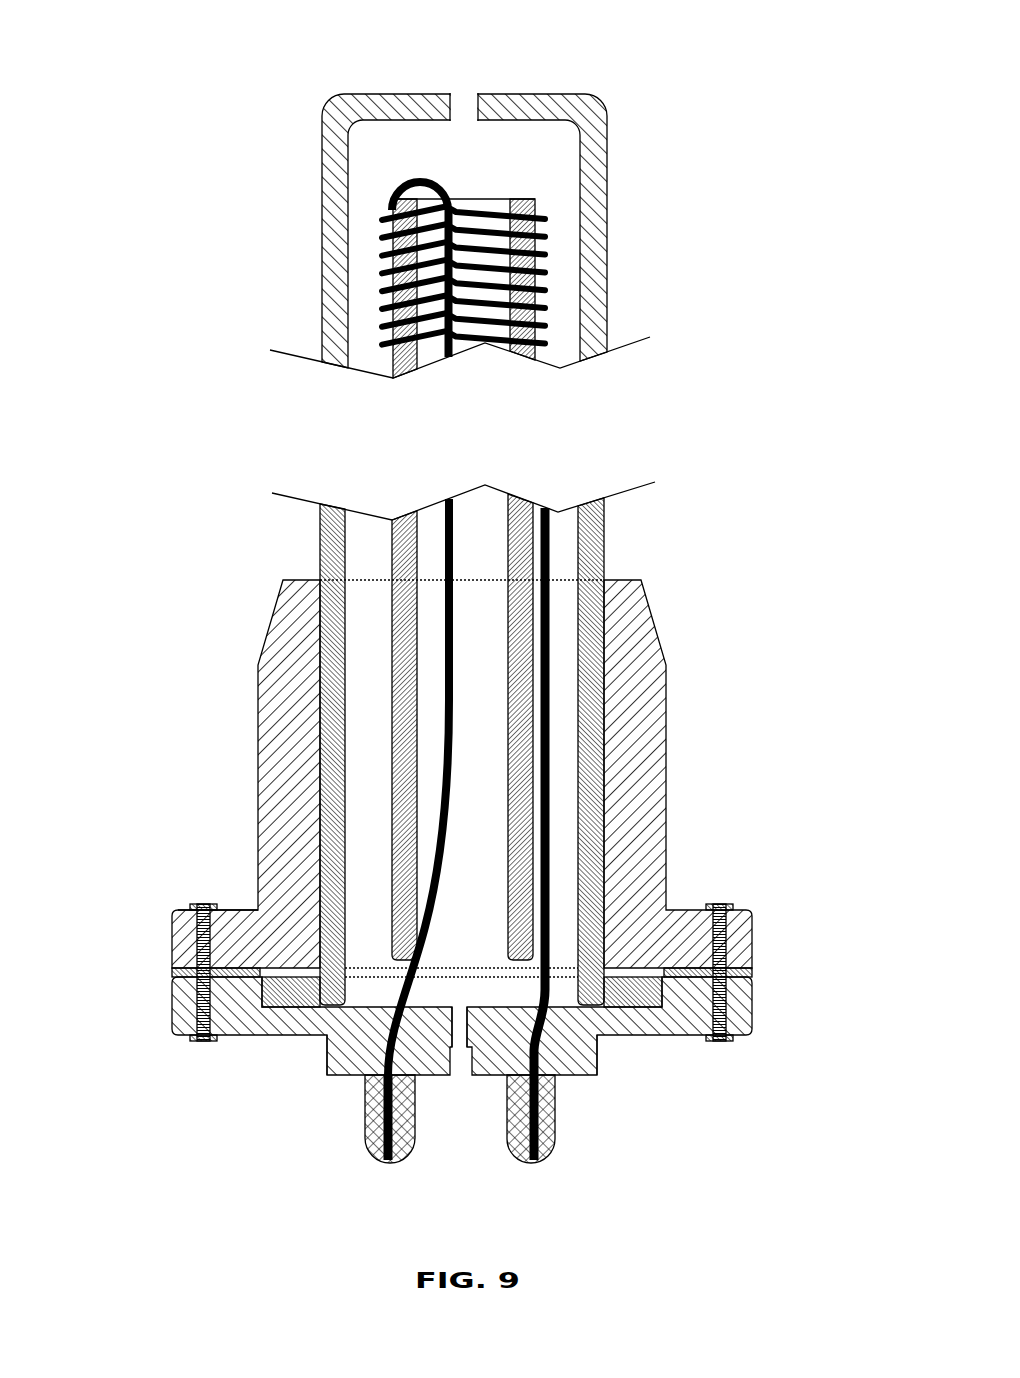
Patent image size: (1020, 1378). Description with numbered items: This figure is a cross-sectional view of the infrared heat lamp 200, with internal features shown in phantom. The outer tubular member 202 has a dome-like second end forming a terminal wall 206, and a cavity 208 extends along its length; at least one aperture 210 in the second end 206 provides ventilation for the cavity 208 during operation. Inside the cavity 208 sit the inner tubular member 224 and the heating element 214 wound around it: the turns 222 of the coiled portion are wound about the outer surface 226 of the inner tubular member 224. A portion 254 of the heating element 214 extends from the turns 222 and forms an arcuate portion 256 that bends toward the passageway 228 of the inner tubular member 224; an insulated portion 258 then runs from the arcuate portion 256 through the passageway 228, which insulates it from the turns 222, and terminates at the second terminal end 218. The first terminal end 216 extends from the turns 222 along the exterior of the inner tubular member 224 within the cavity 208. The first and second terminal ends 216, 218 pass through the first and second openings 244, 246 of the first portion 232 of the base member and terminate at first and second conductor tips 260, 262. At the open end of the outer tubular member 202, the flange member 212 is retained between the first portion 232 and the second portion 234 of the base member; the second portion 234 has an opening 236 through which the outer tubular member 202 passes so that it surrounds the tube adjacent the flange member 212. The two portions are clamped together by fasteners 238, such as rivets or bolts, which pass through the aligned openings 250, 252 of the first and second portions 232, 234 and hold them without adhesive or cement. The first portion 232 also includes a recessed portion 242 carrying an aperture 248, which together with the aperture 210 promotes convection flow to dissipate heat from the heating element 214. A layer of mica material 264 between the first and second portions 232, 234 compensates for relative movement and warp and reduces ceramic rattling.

The infrared heat lamp 200 is at (150, 132).
The outer tubular member 202 is at (626, 538).
The second end (terminal wall) 206 is at (603, 106).
The cavity 208 is at (494, 164).
The aperture 210 is at (467, 98).
The flange member 212 is at (700, 972).
The heating element 214 is at (372, 308).
The first terminal end 216 is at (538, 1134).
The second terminal end 218 is at (367, 1139).
The turns 222 is at (550, 320).
The inner tubular member 224 is at (548, 194).
The outer surface 226 is at (535, 244).
The passageway 228 is at (501, 712).
The first portion 232 is at (198, 1077).
The second portion 234 is at (698, 777).
The opening 236 is at (318, 579).
The fastener 238 is at (207, 905).
The recessed portion 242 is at (483, 986).
The first opening 244 is at (557, 1052).
The second opening 246 is at (392, 1052).
The aperture 248 is at (460, 1050).
The openings 250 is at (193, 1008).
The openings 252 is at (197, 931).
The portion of the heating element 254 is at (393, 206).
The arcuate portion 256 is at (405, 178).
The insulated portion 258 is at (442, 869).
The first conductor tip 260 is at (552, 1161).
The second conductor tip 262 is at (370, 1156).
The mica material 264 is at (175, 973).